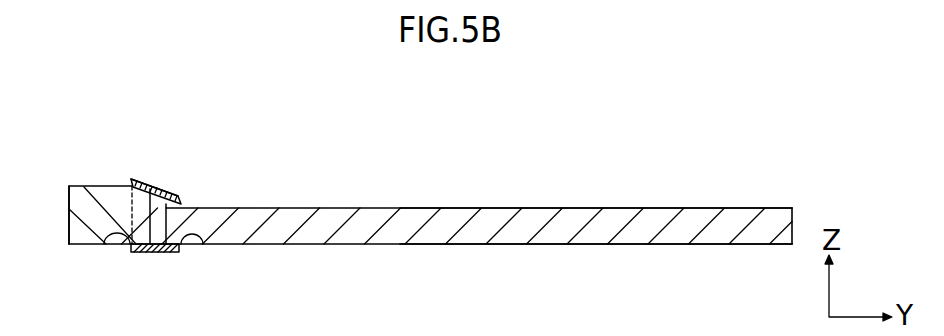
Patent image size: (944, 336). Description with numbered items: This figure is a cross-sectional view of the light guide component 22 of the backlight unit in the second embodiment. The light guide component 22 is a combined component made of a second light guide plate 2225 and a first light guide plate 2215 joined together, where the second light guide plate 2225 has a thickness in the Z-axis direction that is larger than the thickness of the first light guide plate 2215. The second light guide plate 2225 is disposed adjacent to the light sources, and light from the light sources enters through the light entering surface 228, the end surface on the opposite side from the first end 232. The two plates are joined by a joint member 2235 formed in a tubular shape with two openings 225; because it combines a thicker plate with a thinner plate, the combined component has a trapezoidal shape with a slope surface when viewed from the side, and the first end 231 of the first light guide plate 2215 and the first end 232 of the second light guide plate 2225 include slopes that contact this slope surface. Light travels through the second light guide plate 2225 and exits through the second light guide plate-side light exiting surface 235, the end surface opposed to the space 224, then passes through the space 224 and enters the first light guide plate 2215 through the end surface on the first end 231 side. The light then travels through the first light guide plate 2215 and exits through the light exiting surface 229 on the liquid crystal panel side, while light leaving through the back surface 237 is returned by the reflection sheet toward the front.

The light guide component 22 is at (478, 184).
The first light guide plate 2215 is at (373, 223).
The second light guide plate 2225 is at (94, 209).
The joint member 2235 is at (160, 215).
The light exiting surface 229 is at (585, 207).
The back surface 237 is at (629, 246).
The first end 232 is at (134, 180).
The second light guide plate-side light exiting surface 235 is at (181, 197).
The first end 231 is at (173, 218).
The space 224 is at (159, 232).
The openings 225 is at (104, 244).
The light entering surface 228 is at (69, 213).